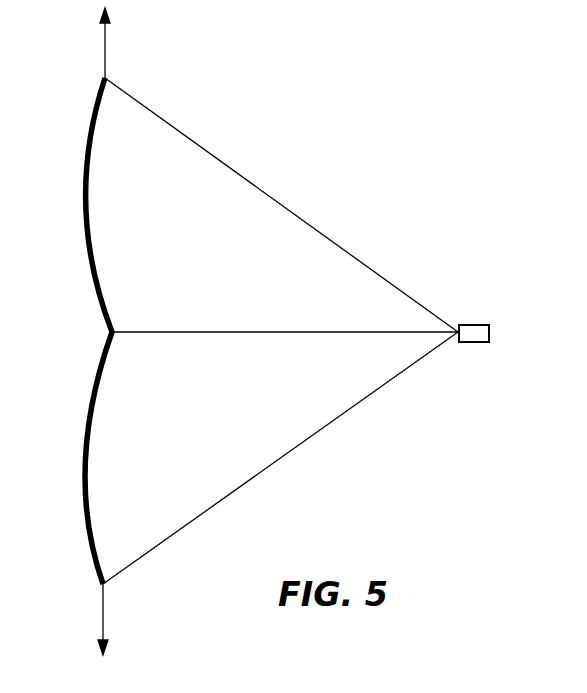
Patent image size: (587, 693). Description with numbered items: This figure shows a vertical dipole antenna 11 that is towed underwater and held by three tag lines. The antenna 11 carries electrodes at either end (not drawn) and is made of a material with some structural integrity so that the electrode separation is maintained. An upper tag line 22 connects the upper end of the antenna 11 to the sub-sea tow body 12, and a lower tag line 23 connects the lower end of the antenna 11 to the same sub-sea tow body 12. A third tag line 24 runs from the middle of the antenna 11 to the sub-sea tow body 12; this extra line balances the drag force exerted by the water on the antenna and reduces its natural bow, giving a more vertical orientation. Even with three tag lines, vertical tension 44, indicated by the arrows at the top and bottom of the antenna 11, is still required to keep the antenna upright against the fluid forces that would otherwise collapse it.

The dipole antenna 11 is at (108, 323).
The sub-sea tow body 12 is at (474, 325).
The upper tag line 22 is at (330, 239).
The lower tag line 23 is at (335, 421).
The third tag line 24 is at (270, 332).
The vertical tension 44 is at (105, 61).